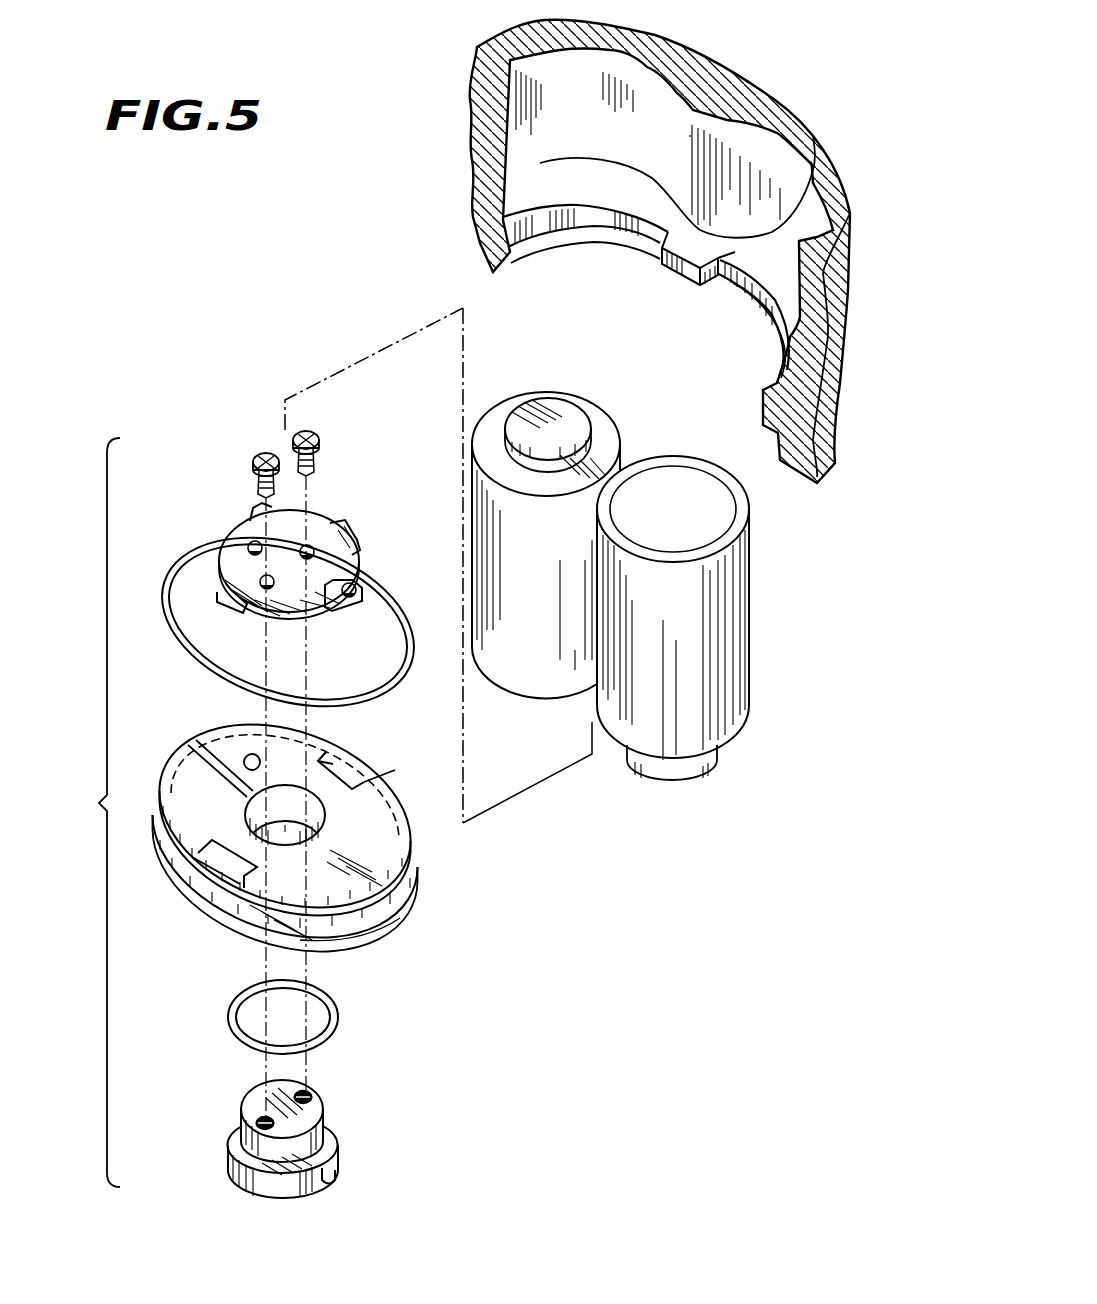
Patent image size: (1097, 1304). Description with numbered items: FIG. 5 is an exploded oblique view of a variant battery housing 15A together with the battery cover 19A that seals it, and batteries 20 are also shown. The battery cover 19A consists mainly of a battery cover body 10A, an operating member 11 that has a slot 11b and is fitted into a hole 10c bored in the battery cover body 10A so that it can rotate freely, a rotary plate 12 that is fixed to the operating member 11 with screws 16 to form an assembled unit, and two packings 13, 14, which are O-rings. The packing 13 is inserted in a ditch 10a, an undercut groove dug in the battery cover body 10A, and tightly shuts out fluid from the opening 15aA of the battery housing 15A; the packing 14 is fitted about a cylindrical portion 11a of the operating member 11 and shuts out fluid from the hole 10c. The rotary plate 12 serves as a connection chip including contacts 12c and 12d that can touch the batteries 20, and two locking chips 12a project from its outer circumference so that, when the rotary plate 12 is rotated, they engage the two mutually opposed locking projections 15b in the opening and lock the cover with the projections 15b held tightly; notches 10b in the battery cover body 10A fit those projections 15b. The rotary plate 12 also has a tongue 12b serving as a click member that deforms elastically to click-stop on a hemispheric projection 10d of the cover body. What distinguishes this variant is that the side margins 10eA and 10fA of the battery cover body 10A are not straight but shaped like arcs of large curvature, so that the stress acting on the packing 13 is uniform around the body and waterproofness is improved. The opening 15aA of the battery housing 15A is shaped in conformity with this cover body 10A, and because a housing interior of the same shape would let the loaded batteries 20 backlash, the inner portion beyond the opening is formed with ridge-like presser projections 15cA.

The battery cover body 10A is at (412, 938).
The ditch 10a is at (370, 930).
The notches 10b is at (348, 772).
The hole 10c is at (412, 845).
The hemispheric projection 10d is at (248, 755).
The side margin 10eA is at (336, 764).
The side margin 10fA is at (240, 893).
The operating member 11 is at (340, 1138).
The cylindrical portion 11a is at (322, 1118).
The slot 11b is at (336, 1182).
The rotary plate 12 is at (368, 555).
The locking chips 12a is at (346, 535).
The tongue 12b is at (255, 508).
The contact 12c is at (250, 547).
The contact 12d is at (354, 589).
The packing 13 is at (405, 625).
The packing 14 is at (330, 1025).
The battery housing 15A is at (485, 92).
The opening 15aA is at (545, 248).
The locking projections 15b is at (693, 252).
The presser projections 15cA is at (678, 148).
The screws 16 is at (295, 435).
The battery cover 19A is at (82, 812).
The batteries 20 is at (675, 457).